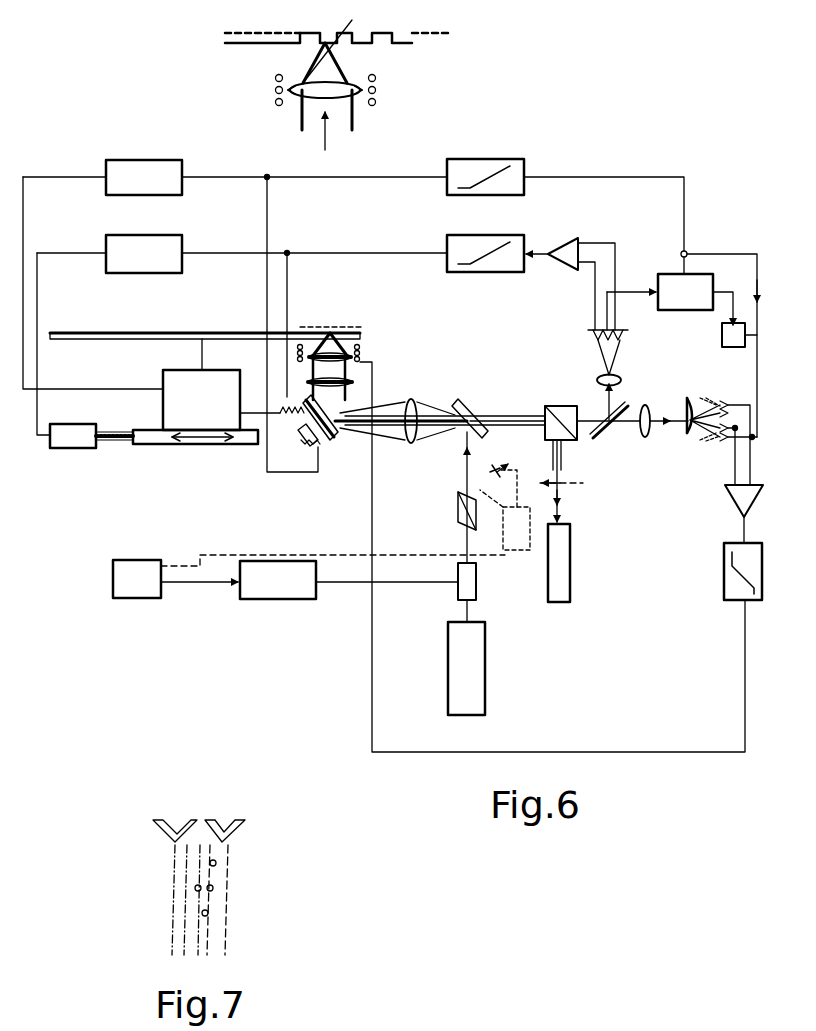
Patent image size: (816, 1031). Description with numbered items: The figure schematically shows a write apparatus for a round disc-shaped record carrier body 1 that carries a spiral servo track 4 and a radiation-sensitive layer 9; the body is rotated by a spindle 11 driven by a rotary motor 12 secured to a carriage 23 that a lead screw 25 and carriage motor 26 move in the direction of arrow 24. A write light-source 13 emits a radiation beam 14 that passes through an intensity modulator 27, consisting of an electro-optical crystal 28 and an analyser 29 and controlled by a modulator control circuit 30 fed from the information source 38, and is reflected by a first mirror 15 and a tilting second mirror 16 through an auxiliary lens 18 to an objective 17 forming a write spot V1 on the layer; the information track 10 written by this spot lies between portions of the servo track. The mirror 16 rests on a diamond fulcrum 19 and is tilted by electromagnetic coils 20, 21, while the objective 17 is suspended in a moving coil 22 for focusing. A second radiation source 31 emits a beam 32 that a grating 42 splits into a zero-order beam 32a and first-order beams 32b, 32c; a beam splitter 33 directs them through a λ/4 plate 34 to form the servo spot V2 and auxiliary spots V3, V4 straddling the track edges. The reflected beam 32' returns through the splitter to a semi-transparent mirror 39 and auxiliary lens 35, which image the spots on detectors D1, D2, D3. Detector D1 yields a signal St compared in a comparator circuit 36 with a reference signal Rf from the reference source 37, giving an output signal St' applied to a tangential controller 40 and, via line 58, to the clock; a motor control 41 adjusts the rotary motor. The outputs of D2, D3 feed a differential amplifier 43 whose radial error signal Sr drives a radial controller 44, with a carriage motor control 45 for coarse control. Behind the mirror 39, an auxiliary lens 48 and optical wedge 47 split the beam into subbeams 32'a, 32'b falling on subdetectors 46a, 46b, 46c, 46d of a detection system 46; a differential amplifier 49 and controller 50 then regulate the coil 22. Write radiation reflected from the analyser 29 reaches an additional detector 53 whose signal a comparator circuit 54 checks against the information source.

In FIG. 6, the record carrier body 1 is at (99, 331).
In FIG. 7, the servo track 4 is at (232, 820).
In FIG. 6, the radiation-sensitive layer 9 is at (285, 327).
In FIG. 7, the information track 10 is at (163, 820).
In FIG. 6, the spindle 11 is at (202, 352).
In FIG. 6, the rotary motor 12 is at (240, 390).
In FIG. 6, the write light-source 13 is at (487, 690).
In FIG. 6, the radiation beam 14 is at (466, 456).
In FIG. 6, the first mirror 15 is at (468, 400).
In FIG. 6, the second mirror 16 is at (335, 438).
In FIG. 6, the objective 17 is at (338, 98).
In FIG. 6, the auxiliary lens 18 is at (407, 443).
In FIG. 6, the diamond fulcrum 19 is at (300, 440).
In FIG. 6, the electromagnetic coil 20 is at (272, 338).
In FIG. 6, the electromagnetic coil 21 is at (318, 450).
In FIG. 6, the moving coil 22 is at (275, 80).
In FIG. 6, the carriage 23 is at (155, 444).
In FIG. 6, the arrow 24 is at (202, 444).
In FIG. 6, the lead screw 25 is at (115, 442).
In FIG. 6, the carriage motor 26 is at (65, 448).
In FIG. 6, the intensity modulator 27 is at (440, 547).
In FIG. 6, the electro-optical crystal 28 is at (476, 588).
In FIG. 6, the analyser 29 is at (458, 503).
In FIG. 6, the modulator control circuit 30 is at (278, 599).
In FIG. 6, the second radiation source 31 is at (570, 565).
In FIG. 6, the beam 32 is at (575, 481).
In FIG. 6, the reflected beam 32' is at (628, 412).
In FIG. 6, the zero-order beam 32a is at (498, 415).
In FIG. 6, the +1-order beam 32b is at (503, 424).
In FIG. 6, the -1-order beam 32c is at (543, 410).
In FIG. 6, the subbeam 32'a is at (694, 389).
In FIG. 6, the subbeam 32'b is at (698, 450).
In FIG. 6, the beam splitter 33 is at (567, 440).
In FIG. 6, the λ/4 plate 34 is at (332, 384).
In FIG. 6, the auxiliary lens 35 is at (613, 375).
In FIG. 6, the comparator circuit 36 is at (713, 283).
In FIG. 6, the reference source 37 is at (722, 336).
In FIG. 6, the information source 38 is at (128, 598).
In FIG. 6, the semi-transparent mirror 39 is at (605, 438).
In FIG. 6, the tangential controller 40 is at (503, 195).
In FIG. 6, the motor control 41 is at (153, 195).
In FIG. 6, the grating 42 is at (578, 482).
In FIG. 6, the differential amplifier 43 is at (567, 244).
In FIG. 6, the radial controller 44 is at (485, 272).
In FIG. 6, the carriage motor control 45 is at (153, 273).
In FIG. 6, the second radiation-sensitive detection system 46 is at (730, 385).
In FIG. 6, the subdetector 46a is at (731, 402).
In FIG. 6, the subdetector 46b is at (731, 411).
In FIG. 6, the subdetector 46c is at (726, 440).
In FIG. 6, the subdetector 46d is at (731, 442).
In FIG. 6, the optical wedge 47 is at (685, 436).
In FIG. 6, the auxiliary lens 48 is at (645, 438).
In FIG. 6, the differential amplifier 49 is at (738, 510).
In FIG. 6, the controller 50 is at (724, 582).
In FIG. 6, the additional detector 53 is at (516, 481).
In FIG. 6, the comparator circuit 54 is at (505, 520).
In FIG. 6, the line 58 is at (718, 254).
In FIG. 6, the write radiation spot V1 is at (325, 43).
In FIG. 7, the write radiation spot V1 is at (195, 888).
In FIG. 6, the servo spot V2 is at (350, 30).
In FIG. 7, the servo spot V2 is at (213, 888).
In FIG. 7, the auxiliary spot V3 is at (217, 863).
In FIG. 7, the auxiliary spot V4 is at (208, 913).
In FIG. 6, the radiation-sensitive detector D1 is at (598, 340).
In FIG. 6, the radiation-sensitive detector D2 is at (603, 333).
In FIG. 6, the radiation-sensitive detector D3 is at (620, 334).
In FIG. 6, the radial error signal Sr is at (538, 275).
In FIG. 6, the signal St is at (631, 297).
In FIG. 6, the signal St' is at (669, 258).
In FIG. 6, the reference signal Rf is at (725, 312).